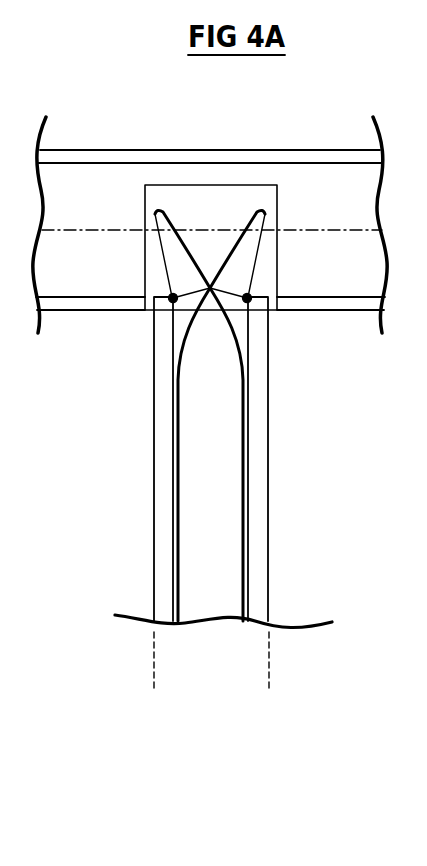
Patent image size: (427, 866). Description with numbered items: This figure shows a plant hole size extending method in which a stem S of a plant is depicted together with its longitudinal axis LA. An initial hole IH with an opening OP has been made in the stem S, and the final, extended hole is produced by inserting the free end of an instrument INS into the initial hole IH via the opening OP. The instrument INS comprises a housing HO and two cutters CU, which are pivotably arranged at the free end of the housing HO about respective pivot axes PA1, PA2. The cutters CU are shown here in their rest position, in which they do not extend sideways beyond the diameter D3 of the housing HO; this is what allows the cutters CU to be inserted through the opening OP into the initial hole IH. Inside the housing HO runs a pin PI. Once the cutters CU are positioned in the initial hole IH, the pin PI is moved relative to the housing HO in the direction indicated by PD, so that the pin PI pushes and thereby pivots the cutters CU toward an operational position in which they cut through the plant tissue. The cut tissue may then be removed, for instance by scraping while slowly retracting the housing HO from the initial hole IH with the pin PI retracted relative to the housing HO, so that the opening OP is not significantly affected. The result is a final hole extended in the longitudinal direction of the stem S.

The stem S is at (139, 150).
The initial hole IH is at (220, 211).
The longitudinal axis LA is at (323, 229).
The cutters CU is at (233, 258).
The pivot axis PA1 is at (172, 297).
The pivot axis PA2 is at (248, 297).
The opening OP is at (153, 311).
The instrument INS is at (154, 498).
The housing HO is at (261, 453).
The pin PI is at (231, 538).
The diameter of the housing D3 is at (269, 668).
The direction of pin movement PD is at (211, 702).